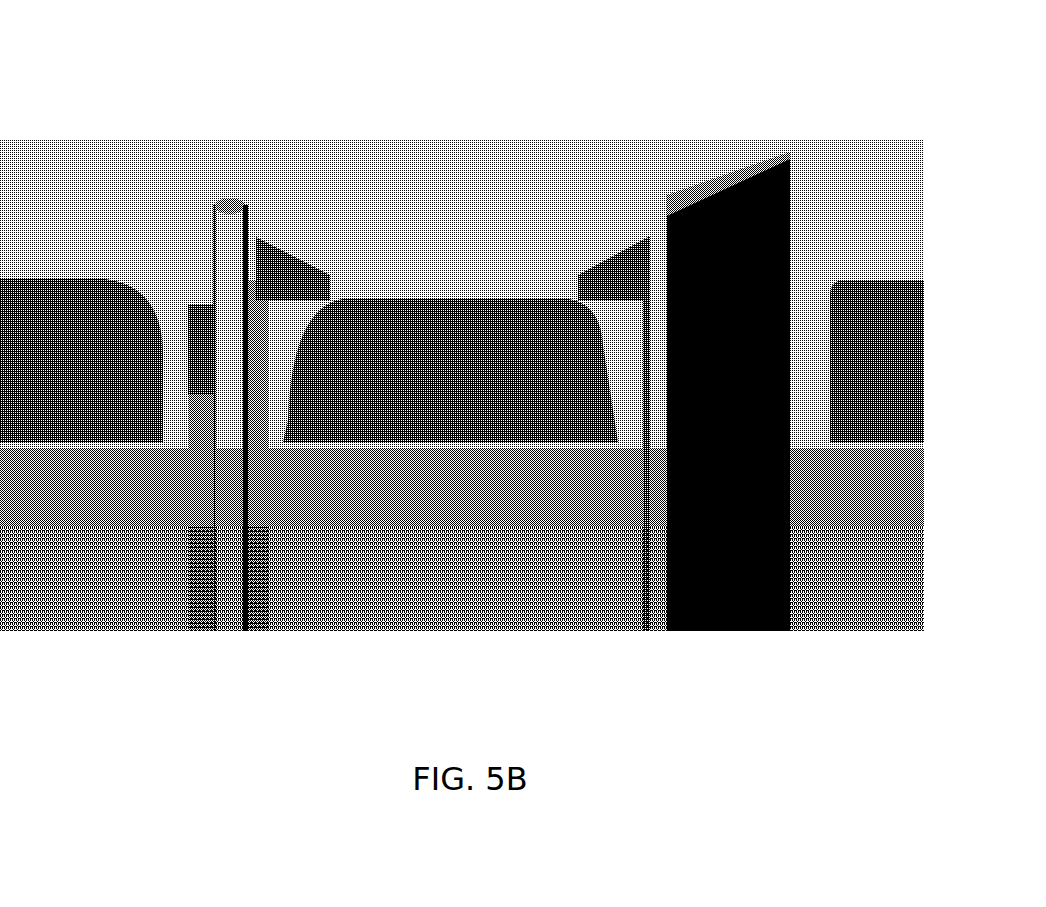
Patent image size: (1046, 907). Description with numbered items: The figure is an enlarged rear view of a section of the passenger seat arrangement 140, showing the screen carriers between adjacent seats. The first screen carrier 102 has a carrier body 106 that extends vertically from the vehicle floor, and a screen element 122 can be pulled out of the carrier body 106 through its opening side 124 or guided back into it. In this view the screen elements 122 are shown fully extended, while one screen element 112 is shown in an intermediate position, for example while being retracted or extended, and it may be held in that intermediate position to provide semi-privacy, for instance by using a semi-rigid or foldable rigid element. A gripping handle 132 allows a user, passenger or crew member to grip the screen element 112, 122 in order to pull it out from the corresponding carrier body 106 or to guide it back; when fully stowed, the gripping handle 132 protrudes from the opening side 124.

The first screen carrier 102 is at (232, 197).
The carrier body 106 is at (265, 237).
The screen element 112 is at (287, 630).
The screen element 122 is at (318, 253).
The opening side 124 is at (213, 235).
The gripping handle 132 is at (358, 630).
The passenger seat arrangement 140 is at (812, 122).